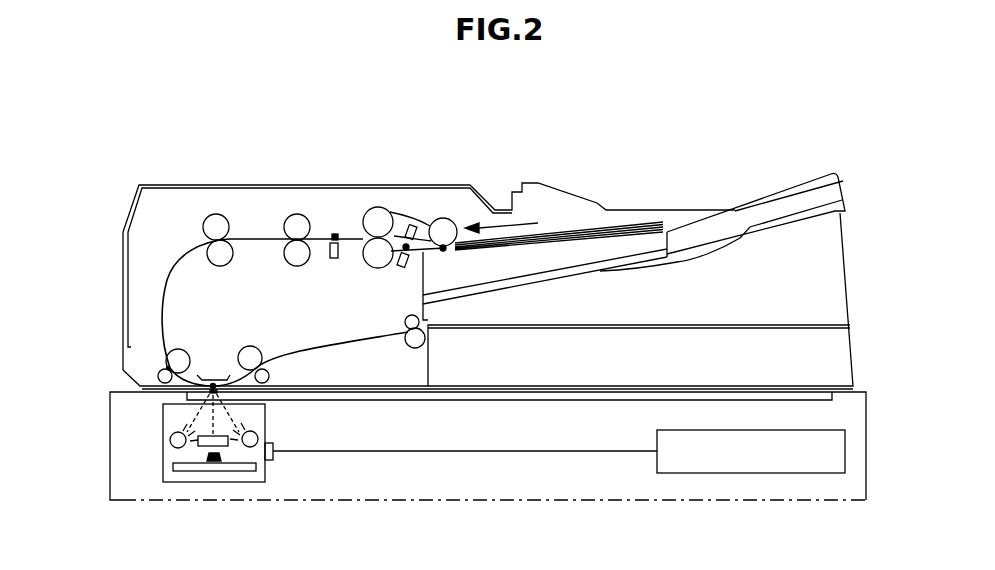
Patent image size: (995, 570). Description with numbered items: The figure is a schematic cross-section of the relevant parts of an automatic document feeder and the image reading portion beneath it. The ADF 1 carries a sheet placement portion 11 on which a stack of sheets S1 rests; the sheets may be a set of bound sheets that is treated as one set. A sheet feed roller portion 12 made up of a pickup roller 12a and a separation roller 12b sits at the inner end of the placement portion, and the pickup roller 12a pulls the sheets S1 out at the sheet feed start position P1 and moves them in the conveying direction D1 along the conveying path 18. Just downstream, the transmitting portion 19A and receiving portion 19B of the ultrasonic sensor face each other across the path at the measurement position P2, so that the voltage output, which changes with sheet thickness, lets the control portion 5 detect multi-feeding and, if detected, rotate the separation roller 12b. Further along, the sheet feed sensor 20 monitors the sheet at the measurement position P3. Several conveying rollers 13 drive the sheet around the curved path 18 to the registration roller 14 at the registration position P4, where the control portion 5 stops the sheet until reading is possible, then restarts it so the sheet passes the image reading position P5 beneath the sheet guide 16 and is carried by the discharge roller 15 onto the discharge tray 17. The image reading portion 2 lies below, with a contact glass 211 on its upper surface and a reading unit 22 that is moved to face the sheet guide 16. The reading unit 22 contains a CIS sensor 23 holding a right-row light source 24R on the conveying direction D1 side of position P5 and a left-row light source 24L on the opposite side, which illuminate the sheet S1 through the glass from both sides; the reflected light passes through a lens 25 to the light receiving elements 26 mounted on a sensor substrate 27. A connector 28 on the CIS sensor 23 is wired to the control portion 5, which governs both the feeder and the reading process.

The ADF 1 is at (123, 257).
The image reading portion 2 is at (108, 463).
The control portion 5 is at (768, 474).
The sheet placement portion 11 is at (595, 228).
The sheet feed roller portion 12 is at (390, 180).
The pickup roller 12a is at (455, 217).
The separation roller 12b is at (370, 265).
The conveying rollers 13 is at (215, 215).
The registration roller 14 is at (163, 368).
The discharge roller 15 is at (407, 347).
The sheet guide 16 is at (220, 373).
The discharge tray 17 is at (606, 323).
The conveying path 18 is at (170, 268).
The transmitting portion 19A is at (396, 266).
The receiving portion 19B is at (413, 226).
The sheet feed sensor 20 is at (333, 259).
The reading unit 22 is at (153, 487).
The CIS sensor 23 is at (163, 420).
The left-row light source 24L is at (170, 441).
The right-row light source 24R is at (262, 435).
The lens 25 is at (198, 447).
The light receiving elements 26 is at (230, 460).
The sensor substrate 27 is at (200, 472).
The connector 28 is at (275, 455).
The contact glass 211 is at (605, 401).
The conveying direction D1 is at (503, 220).
The sheet feed start position P1 is at (443, 252).
The measurement position P2 is at (406, 252).
The measurement position P3 is at (335, 233).
The registration position P4 is at (165, 366).
The image reading position P5 is at (208, 375).
The sheets S1 is at (555, 230).